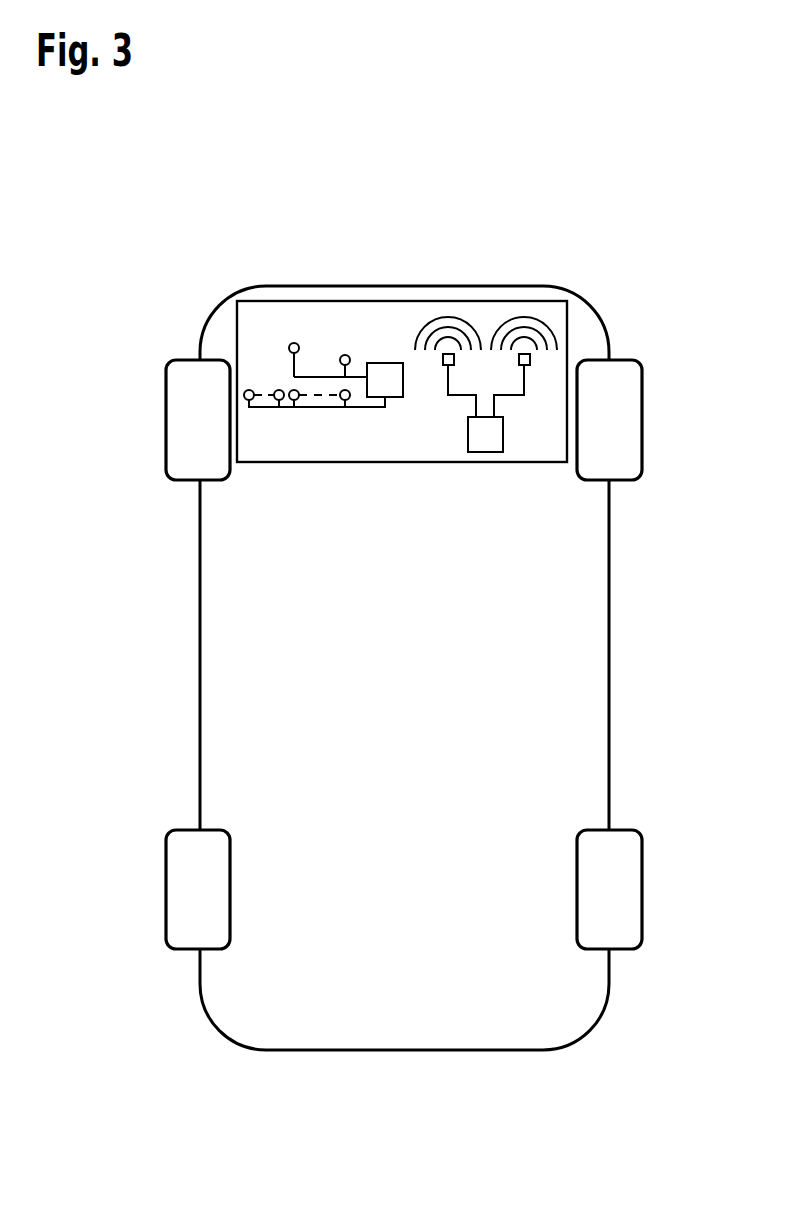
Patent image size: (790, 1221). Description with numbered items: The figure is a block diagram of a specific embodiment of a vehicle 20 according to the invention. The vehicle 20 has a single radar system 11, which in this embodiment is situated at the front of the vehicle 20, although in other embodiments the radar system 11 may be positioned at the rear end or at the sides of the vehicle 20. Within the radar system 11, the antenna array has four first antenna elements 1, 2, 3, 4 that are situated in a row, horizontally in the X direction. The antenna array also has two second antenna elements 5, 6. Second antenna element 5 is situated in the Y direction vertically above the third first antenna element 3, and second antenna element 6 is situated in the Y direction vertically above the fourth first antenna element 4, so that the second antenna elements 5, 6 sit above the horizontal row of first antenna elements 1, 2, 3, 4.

The first antenna element 1 is at (249, 407).
The first antenna element 2 is at (279, 407).
The first antenna element 3 is at (294, 407).
The first antenna element 4 is at (345, 407).
The second antenna element 5 is at (294, 340).
The second antenna element 6 is at (345, 352).
The radar system 11 is at (402, 435).
The vehicle 20 is at (609, 652).